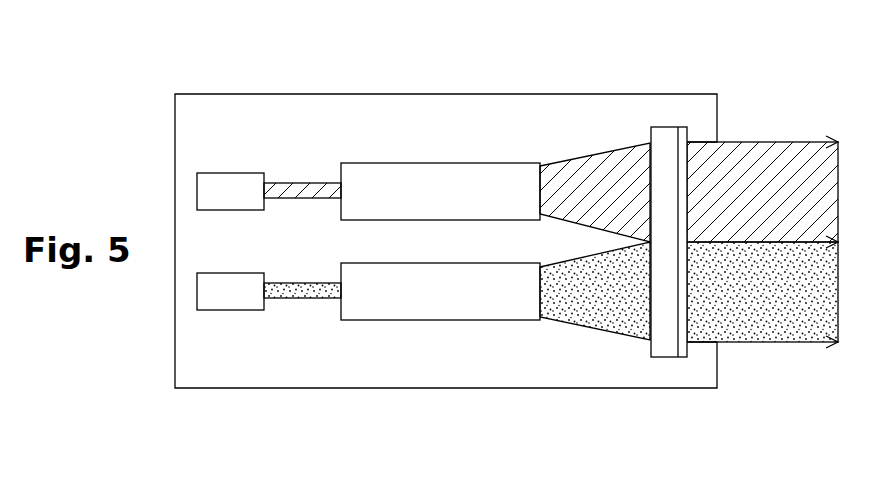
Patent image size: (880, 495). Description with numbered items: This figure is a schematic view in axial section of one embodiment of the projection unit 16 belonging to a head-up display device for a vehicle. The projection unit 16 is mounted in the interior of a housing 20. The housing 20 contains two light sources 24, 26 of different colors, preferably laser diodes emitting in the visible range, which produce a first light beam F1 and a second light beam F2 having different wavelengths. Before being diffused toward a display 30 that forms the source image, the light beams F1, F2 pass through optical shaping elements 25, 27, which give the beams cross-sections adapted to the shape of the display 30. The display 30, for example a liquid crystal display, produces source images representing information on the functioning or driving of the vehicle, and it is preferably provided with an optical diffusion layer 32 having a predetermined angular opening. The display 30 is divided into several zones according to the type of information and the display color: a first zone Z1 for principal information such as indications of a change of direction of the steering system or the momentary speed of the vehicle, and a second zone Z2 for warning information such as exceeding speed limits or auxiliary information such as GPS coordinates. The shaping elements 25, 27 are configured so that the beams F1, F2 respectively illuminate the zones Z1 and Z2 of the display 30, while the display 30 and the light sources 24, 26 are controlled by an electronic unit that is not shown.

The projection unit 16 is at (163, 417).
The housing 20 is at (482, 389).
The light source 24 is at (242, 172).
The optical shaping element 25 is at (422, 162).
The light source 26 is at (221, 312).
The optical shaping element 27 is at (431, 321).
The display 30 is at (667, 125).
The optical diffusion layer 32 is at (688, 133).
The first light beam F1 is at (308, 182).
The second light beam F2 is at (311, 300).
The first zone Z1 is at (650, 181).
The second zone Z2 is at (650, 290).